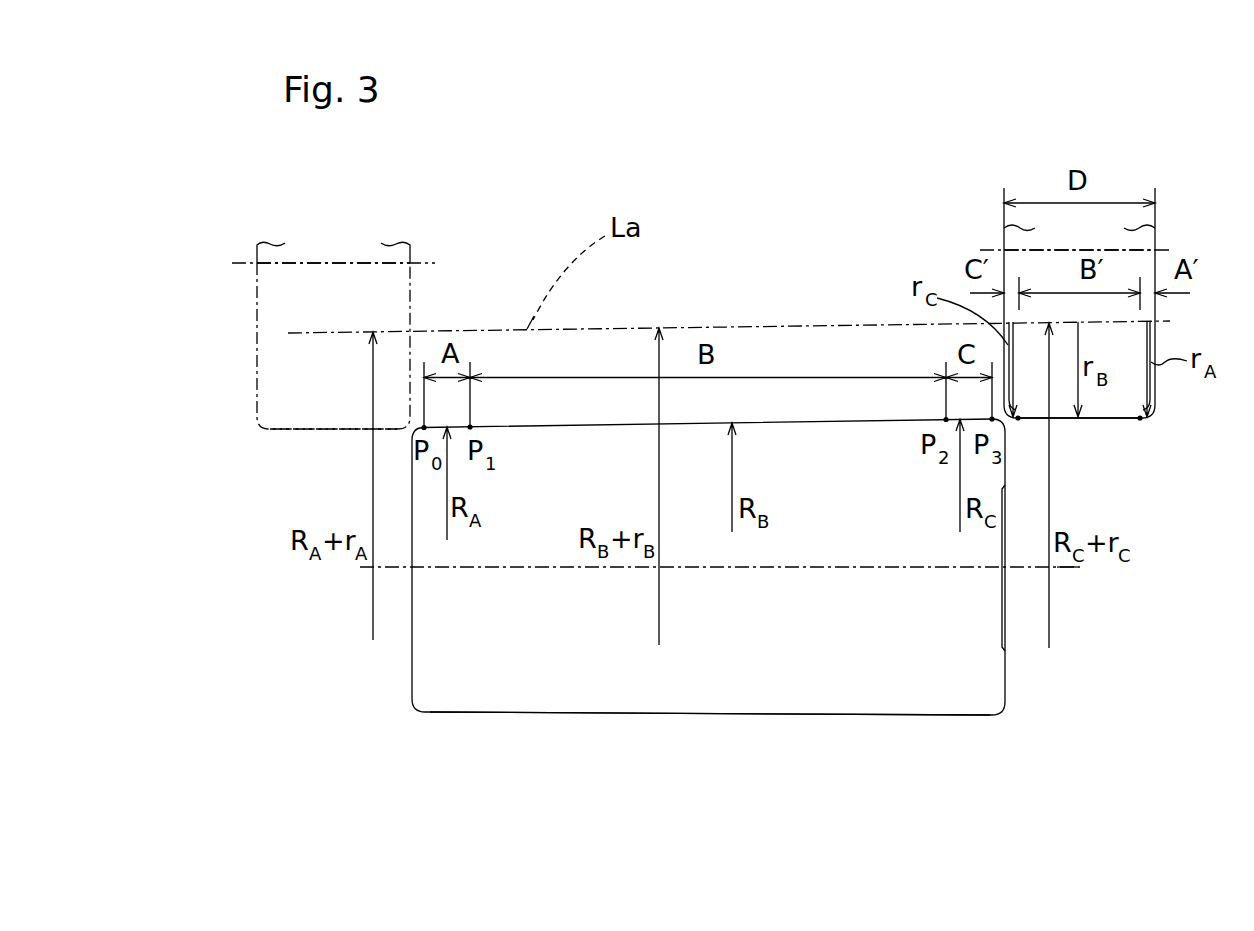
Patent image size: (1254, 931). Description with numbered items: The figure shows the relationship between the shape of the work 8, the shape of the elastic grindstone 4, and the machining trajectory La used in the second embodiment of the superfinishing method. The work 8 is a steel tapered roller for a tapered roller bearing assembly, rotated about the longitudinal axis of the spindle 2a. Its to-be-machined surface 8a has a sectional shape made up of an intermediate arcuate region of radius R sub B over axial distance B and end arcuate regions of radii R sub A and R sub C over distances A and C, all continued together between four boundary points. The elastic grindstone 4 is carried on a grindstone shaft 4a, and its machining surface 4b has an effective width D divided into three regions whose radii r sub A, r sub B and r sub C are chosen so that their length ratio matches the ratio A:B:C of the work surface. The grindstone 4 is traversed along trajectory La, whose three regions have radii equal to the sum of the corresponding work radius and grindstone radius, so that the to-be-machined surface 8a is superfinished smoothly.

The spindle 2a is at (1062, 569).
The elastic grindstone 4 is at (268, 401).
The grindstone shaft 4a is at (432, 262).
The machining surface 4b is at (328, 430).
The work 8 is at (428, 676).
The to-be-machined surface 8a is at (742, 715).